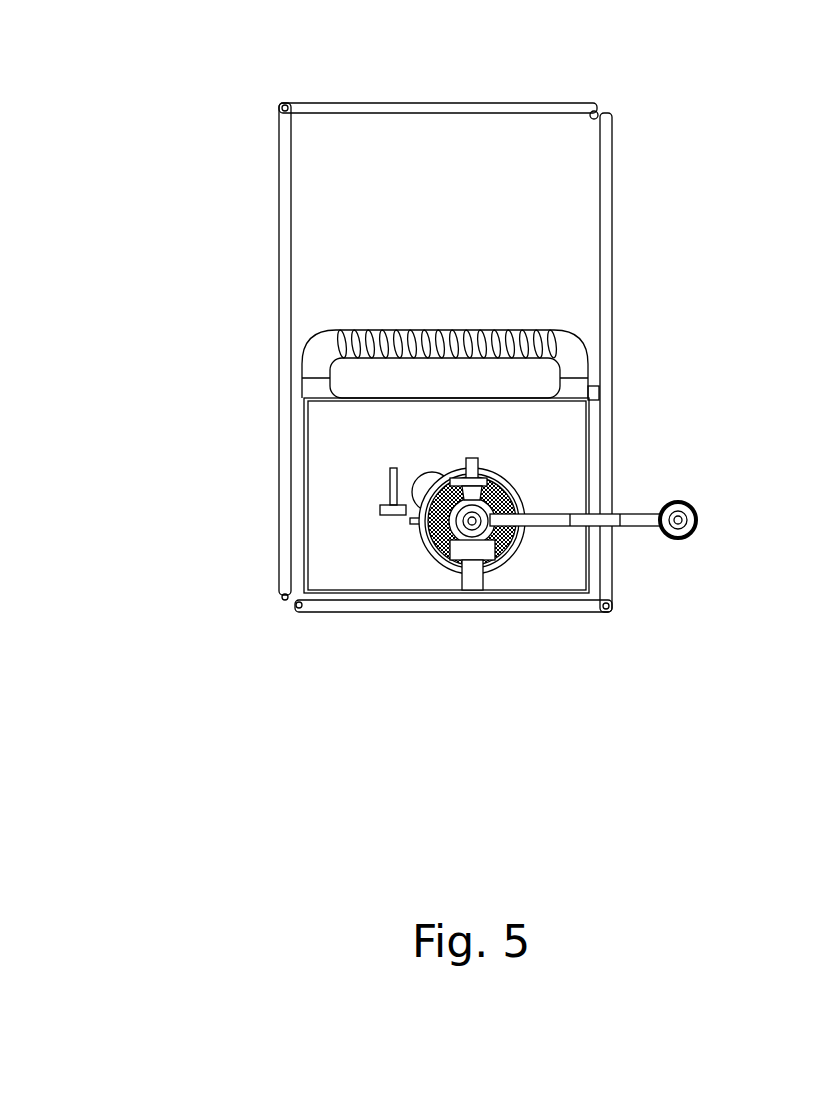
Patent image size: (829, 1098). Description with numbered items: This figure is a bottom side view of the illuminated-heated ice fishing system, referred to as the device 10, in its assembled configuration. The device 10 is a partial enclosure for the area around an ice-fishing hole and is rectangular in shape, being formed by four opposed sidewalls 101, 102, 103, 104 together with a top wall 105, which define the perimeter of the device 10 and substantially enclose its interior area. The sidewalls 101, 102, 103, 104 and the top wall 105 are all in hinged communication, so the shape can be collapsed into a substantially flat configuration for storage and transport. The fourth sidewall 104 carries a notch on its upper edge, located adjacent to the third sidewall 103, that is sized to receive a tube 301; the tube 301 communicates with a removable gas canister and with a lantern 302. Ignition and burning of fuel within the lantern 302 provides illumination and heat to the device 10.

The device 10 is at (126, 57).
The sidewall 101 is at (425, 103).
The sidewall 102 is at (280, 305).
The third sidewall 103 is at (553, 612).
The fourth sidewall 104 is at (612, 262).
The top wall 105 is at (345, 455).
The tube 301 is at (637, 512).
The lantern 302 is at (520, 500).